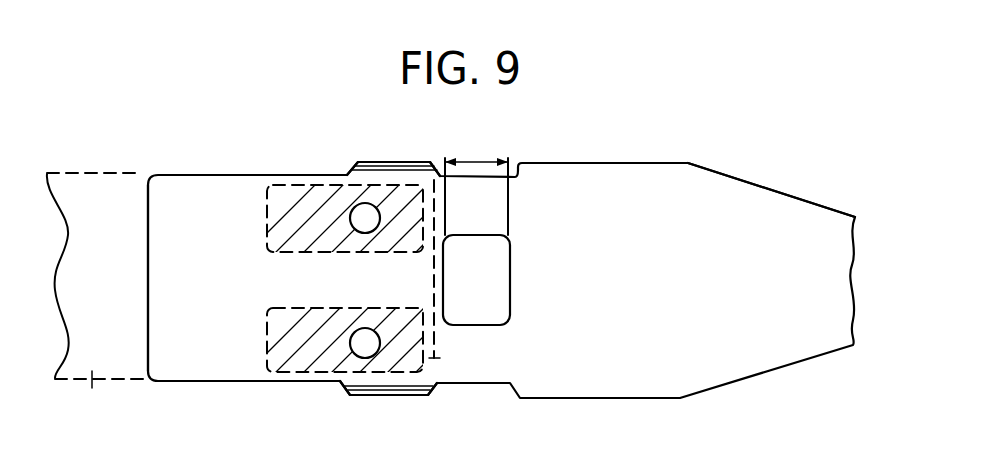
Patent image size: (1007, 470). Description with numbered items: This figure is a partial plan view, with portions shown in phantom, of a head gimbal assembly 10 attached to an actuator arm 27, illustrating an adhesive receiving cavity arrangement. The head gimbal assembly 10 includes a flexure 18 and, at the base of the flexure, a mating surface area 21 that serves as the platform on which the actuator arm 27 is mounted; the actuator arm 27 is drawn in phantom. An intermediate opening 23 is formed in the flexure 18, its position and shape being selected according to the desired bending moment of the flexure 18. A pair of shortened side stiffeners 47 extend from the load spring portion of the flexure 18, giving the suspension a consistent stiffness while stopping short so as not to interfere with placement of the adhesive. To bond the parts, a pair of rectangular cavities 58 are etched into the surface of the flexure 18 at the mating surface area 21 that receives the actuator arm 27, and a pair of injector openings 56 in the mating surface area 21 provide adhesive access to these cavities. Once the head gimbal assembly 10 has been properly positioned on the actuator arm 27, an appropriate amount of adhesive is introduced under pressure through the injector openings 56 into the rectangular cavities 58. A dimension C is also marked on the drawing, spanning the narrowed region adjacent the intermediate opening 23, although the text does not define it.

The head suspension assembly 10 is at (697, 108).
The flexure 18 is at (585, 393).
The mating surface area 21 is at (170, 192).
The intermediate opening 23 is at (472, 236).
The actuator arm 27 is at (95, 384).
The shortened side stiffeners 47 is at (414, 160).
The injector openings 56 is at (352, 206).
The rectangular cavities 58 is at (267, 222).
The groove width C is at (464, 160).